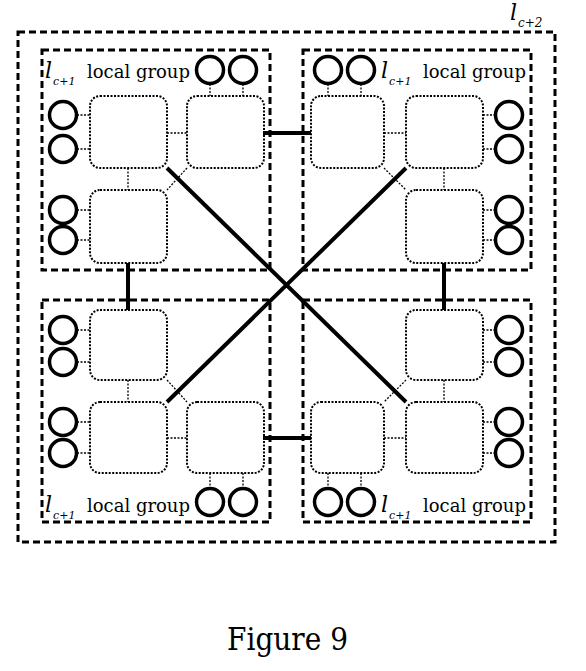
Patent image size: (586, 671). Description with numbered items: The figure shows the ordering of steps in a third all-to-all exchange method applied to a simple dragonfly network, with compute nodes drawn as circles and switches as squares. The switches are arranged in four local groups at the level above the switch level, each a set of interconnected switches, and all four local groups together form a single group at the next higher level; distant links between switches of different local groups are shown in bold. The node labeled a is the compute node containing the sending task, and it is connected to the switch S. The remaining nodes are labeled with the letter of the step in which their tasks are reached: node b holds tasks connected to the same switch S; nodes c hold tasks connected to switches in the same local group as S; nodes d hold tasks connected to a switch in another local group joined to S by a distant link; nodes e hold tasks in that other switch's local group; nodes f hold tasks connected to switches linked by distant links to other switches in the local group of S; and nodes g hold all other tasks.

The node containing the sending task a is at (70, 453).
The node reached in step b is at (70, 422).
The nodes reached in step c is at (153, 416).
The nodes reached in step d is at (503, 132).
The nodes reached in step e is at (419, 155).
The nodes reached in step f is at (212, 356).
The nodes reached in step g is at (286, 262).
The level l_c switch S is at (128, 437).